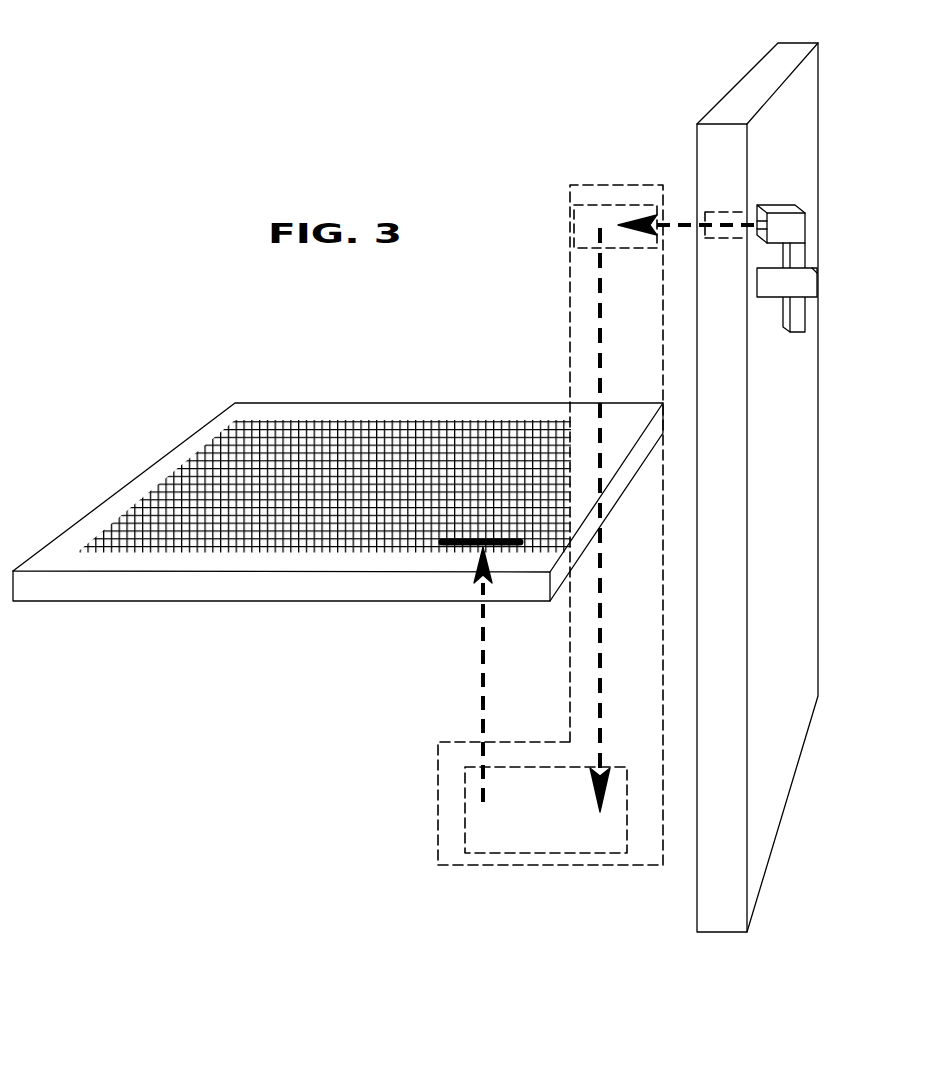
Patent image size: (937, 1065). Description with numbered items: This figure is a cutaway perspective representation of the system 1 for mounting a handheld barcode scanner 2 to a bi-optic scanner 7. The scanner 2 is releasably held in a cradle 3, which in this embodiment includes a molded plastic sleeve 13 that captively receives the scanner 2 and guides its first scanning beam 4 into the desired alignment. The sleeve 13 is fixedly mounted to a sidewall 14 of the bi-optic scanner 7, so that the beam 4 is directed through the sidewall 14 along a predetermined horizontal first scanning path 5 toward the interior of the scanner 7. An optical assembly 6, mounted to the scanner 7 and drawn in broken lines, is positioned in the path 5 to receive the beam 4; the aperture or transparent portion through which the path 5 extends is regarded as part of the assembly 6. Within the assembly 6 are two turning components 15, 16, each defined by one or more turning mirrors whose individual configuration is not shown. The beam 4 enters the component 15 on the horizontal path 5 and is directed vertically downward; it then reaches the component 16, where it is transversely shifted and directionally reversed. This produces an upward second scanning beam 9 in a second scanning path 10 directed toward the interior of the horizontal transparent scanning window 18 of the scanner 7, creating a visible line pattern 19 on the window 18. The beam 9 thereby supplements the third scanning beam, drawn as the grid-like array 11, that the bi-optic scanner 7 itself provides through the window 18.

The system 1 is at (566, 38).
The handheld barcode scanner 2 is at (795, 225).
The cradle 3 is at (807, 290).
The first scanning beam 4 is at (681, 225).
The first scanning path 5 is at (681, 225).
The optical assembly 6 is at (582, 638).
The bi-optic scanner 7 is at (145, 477).
The second scanning beam 9 is at (483, 692).
The second scanning path 10 is at (482, 625).
The array 11 is at (272, 437).
The molded plastic sleeve 13 is at (807, 275).
The sidewall 14 is at (787, 496).
The turning component 15 is at (588, 228).
The turning component 16 is at (555, 843).
The horizontal transparent scanning window 18 is at (137, 562).
The visible line pattern 19 is at (450, 548).